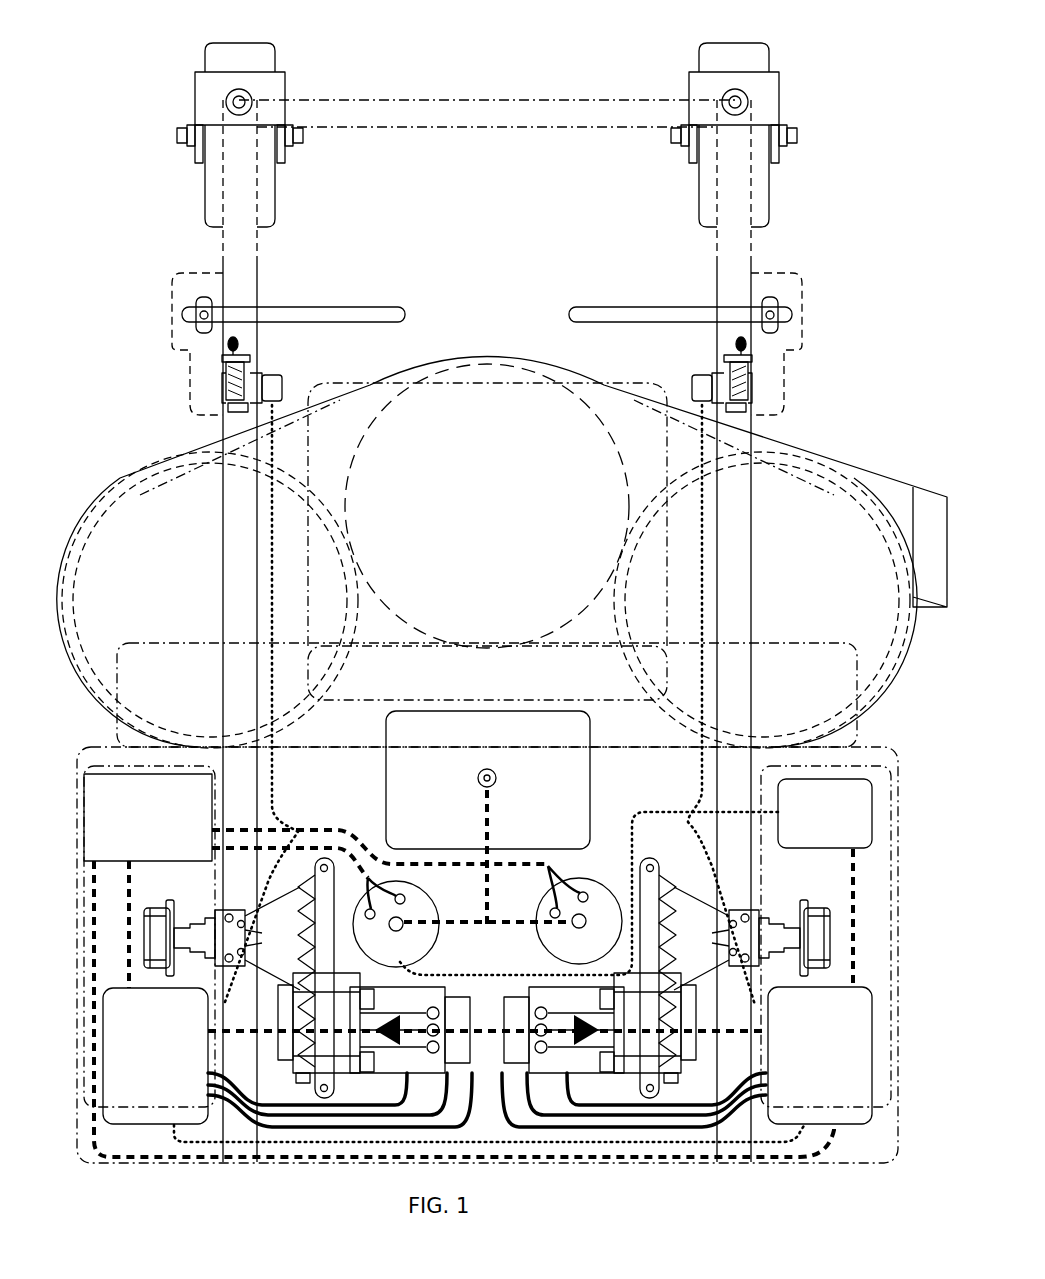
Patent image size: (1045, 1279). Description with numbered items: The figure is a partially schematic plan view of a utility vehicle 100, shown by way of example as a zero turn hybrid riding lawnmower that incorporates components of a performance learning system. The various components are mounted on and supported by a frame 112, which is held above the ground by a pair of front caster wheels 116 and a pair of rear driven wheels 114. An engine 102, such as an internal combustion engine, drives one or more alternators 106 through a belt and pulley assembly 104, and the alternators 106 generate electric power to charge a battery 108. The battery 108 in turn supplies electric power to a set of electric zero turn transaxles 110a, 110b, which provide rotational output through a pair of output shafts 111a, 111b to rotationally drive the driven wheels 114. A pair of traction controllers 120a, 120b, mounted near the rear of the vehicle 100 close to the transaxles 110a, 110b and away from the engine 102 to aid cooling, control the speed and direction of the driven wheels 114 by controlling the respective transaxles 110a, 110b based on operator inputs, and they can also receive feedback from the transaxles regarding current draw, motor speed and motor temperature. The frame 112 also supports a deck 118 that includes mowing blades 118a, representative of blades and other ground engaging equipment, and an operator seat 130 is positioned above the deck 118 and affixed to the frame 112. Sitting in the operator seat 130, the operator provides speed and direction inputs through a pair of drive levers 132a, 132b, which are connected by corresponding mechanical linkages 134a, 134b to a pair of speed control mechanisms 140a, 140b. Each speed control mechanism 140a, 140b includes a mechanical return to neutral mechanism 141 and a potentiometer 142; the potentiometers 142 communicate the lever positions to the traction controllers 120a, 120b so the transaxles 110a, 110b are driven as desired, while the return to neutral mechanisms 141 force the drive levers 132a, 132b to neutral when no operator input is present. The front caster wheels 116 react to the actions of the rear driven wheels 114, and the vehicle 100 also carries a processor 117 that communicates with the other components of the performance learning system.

The utility vehicle 100 is at (128, 118).
The engine 102 is at (457, 819).
The belt and pulley assembly 104 is at (496, 814).
The alternator 106 is at (430, 944).
The battery 108 is at (170, 831).
The electric zero turn transaxle 110a is at (720, 1048).
The electric zero turn transaxle 110b is at (254, 1050).
The output shaft 111a is at (790, 922).
The output shaft 111b is at (190, 925).
The frame 112 is at (222, 253).
The driven wheel 114 is at (77, 1083).
The caster wheel 116 is at (240, 42).
The processor 117 is at (843, 825).
The deck 118 is at (168, 448).
The mowing blade 118a is at (123, 490).
The traction controller 120a is at (848, 1029).
The traction controller 120b is at (181, 1031).
The operator seat 130 is at (600, 696).
The drive lever 132a is at (590, 306).
The drive lever 132b is at (382, 306).
The mechanical linkage 134a is at (768, 347).
The mechanical linkage 134b is at (207, 343).
The speed control mechanism 140a is at (796, 384).
The speed control mechanism 140b is at (174, 384).
The return to neutral mechanism 141 is at (242, 356).
The potentiometer 142 is at (282, 385).